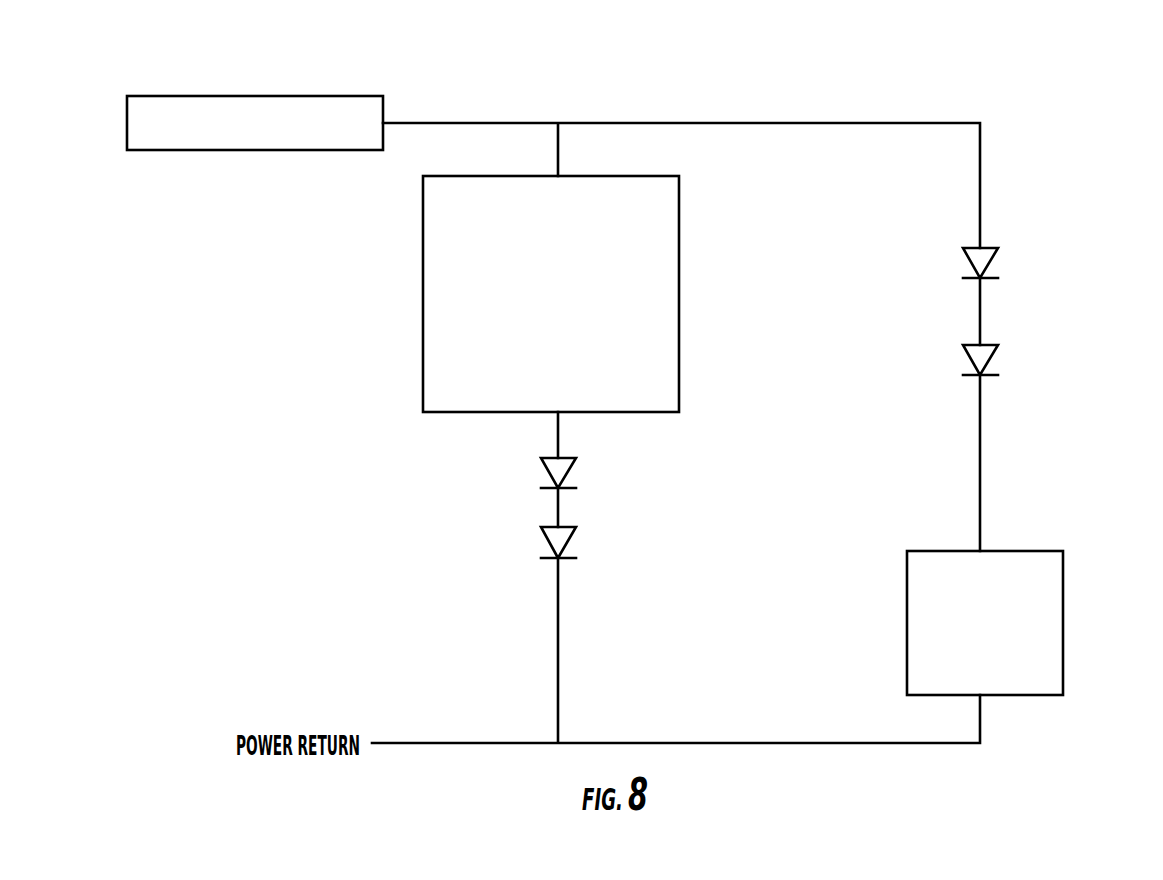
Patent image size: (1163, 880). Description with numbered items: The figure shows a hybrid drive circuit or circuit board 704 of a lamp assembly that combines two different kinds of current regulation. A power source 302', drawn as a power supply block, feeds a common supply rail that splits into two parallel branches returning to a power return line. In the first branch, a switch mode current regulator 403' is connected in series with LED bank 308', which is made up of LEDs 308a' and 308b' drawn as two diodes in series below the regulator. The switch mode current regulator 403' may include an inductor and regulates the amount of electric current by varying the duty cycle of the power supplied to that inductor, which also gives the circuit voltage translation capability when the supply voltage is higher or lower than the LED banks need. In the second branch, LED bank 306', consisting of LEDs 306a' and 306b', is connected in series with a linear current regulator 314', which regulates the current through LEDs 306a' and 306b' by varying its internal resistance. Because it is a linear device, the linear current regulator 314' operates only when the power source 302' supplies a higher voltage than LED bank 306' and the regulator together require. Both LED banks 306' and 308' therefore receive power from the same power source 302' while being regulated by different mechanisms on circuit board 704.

The circuit board 704 is at (1048, 136).
The power source 302' is at (224, 156).
The switch mode current regulator 403' is at (592, 294).
The LED bank 308' is at (567, 493).
The LED 308a' is at (594, 458).
The LED 308b' is at (594, 529).
The LED bank 306' is at (993, 298).
The LED 306a' is at (1015, 249).
The LED 306b' is at (1015, 345).
The linear current regulator 314' is at (1018, 609).